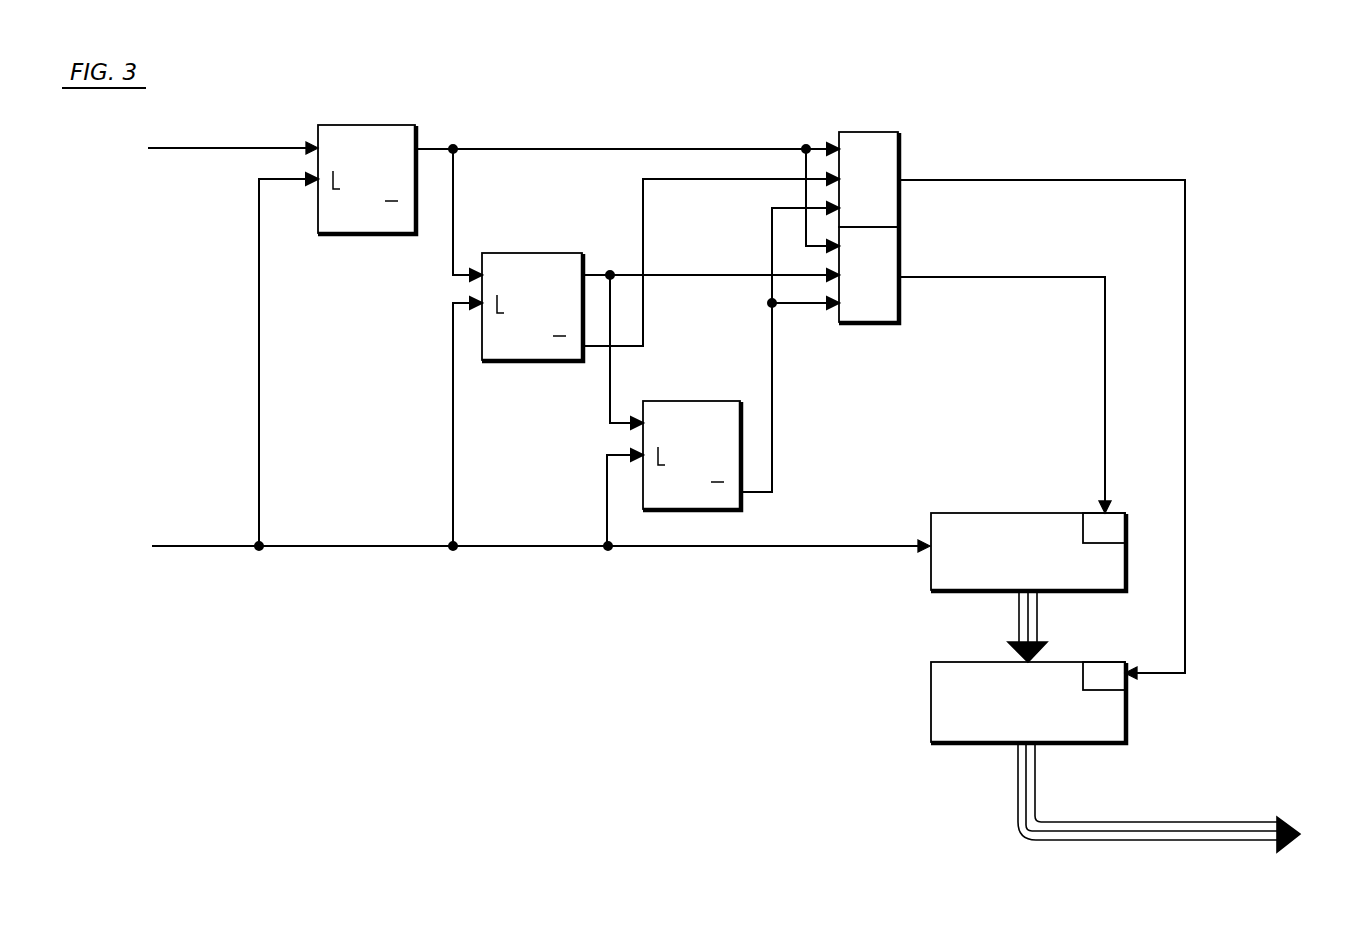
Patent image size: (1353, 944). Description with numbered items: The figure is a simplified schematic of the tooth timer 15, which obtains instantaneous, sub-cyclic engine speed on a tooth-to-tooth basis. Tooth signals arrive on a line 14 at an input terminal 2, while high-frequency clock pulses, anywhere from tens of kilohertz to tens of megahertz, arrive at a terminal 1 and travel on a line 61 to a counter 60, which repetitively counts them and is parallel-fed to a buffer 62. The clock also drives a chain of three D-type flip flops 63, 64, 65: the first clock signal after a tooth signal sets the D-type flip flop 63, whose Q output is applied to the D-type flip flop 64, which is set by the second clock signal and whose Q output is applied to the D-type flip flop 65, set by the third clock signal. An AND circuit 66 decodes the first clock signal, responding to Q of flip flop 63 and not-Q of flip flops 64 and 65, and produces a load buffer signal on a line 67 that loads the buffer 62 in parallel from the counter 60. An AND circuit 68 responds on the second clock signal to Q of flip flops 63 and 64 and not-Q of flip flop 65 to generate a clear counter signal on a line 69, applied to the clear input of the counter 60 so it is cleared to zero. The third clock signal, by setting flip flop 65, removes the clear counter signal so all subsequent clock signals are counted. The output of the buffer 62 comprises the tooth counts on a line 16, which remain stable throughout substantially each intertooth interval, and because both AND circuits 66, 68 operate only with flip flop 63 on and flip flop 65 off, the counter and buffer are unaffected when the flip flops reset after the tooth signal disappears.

The clock input terminal 1 is at (730, 687).
The tooth signal input terminal 2 is at (220, 149).
The line 14 is at (272, 147).
The tooth timer 15 is at (1060, 137).
The line 16 is at (1180, 834).
The counter 60 is at (1000, 512).
The line 61 is at (793, 548).
The buffer 62 is at (931, 698).
The D-type flip flop 63 is at (365, 124).
The D-type flip flop 64 is at (530, 252).
The D-type flip flop 65 is at (685, 400).
The AND circuit 66 is at (867, 132).
The line 67 is at (1130, 180).
The AND circuit 68 is at (872, 318).
The line 69 is at (1105, 374).